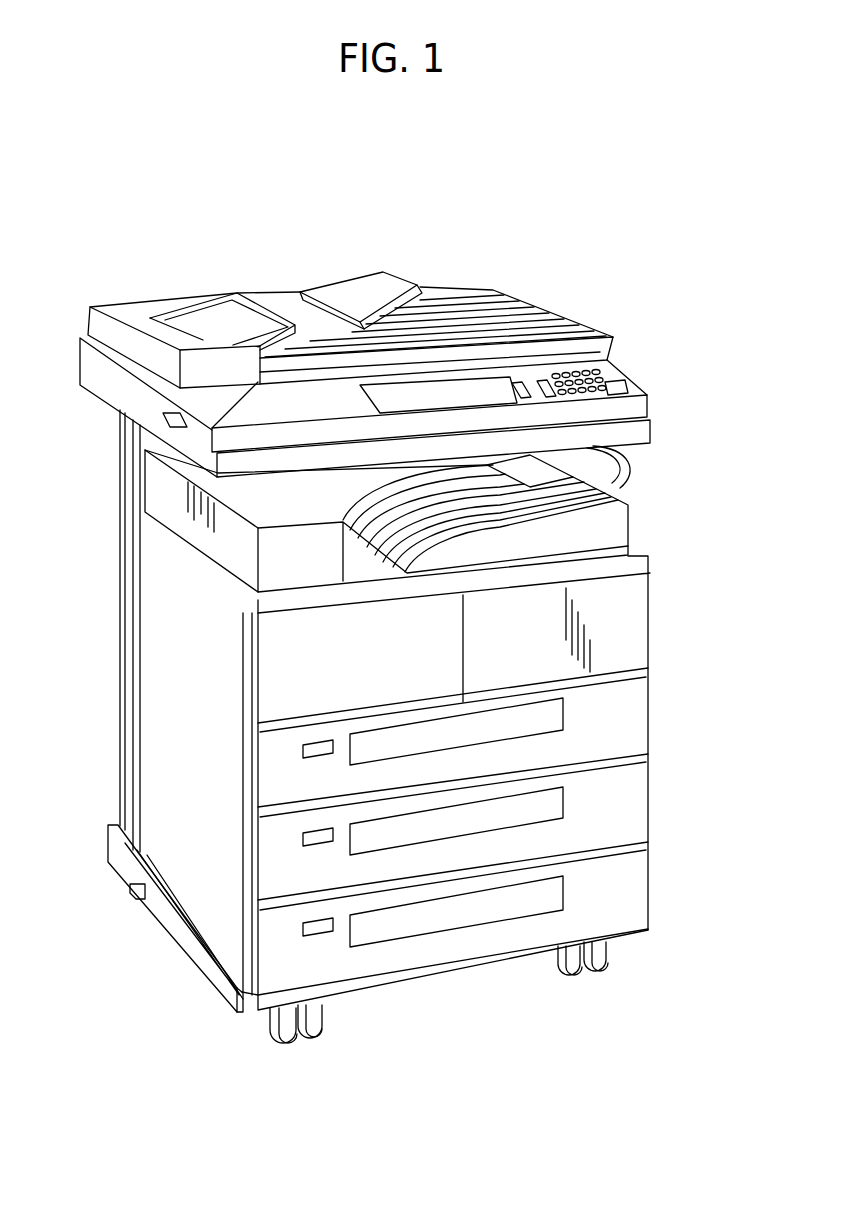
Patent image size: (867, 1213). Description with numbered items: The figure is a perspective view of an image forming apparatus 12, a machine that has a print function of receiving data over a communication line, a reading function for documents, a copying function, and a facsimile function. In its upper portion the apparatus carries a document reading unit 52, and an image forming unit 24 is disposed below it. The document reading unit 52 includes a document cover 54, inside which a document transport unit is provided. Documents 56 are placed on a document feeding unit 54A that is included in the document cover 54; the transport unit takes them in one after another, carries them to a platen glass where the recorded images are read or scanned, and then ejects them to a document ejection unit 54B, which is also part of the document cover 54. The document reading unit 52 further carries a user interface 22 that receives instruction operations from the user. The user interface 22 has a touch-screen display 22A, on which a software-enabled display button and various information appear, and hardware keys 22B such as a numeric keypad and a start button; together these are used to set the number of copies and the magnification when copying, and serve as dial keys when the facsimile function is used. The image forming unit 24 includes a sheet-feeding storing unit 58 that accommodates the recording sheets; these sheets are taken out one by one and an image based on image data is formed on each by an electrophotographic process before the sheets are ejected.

The image forming apparatus 12 is at (575, 196).
The user interface 22 is at (640, 373).
The touch-screen display 22A is at (378, 404).
The hardware keys 22B is at (600, 372).
The image forming unit 24 is at (177, 858).
The document reading unit 52 is at (95, 368).
The document cover 54 is at (96, 325).
The document feeding unit 54A is at (350, 280).
The document ejection unit 54B is at (432, 322).
The documents 56 is at (196, 318).
The sheet-feeding storing unit 58 is at (637, 718).